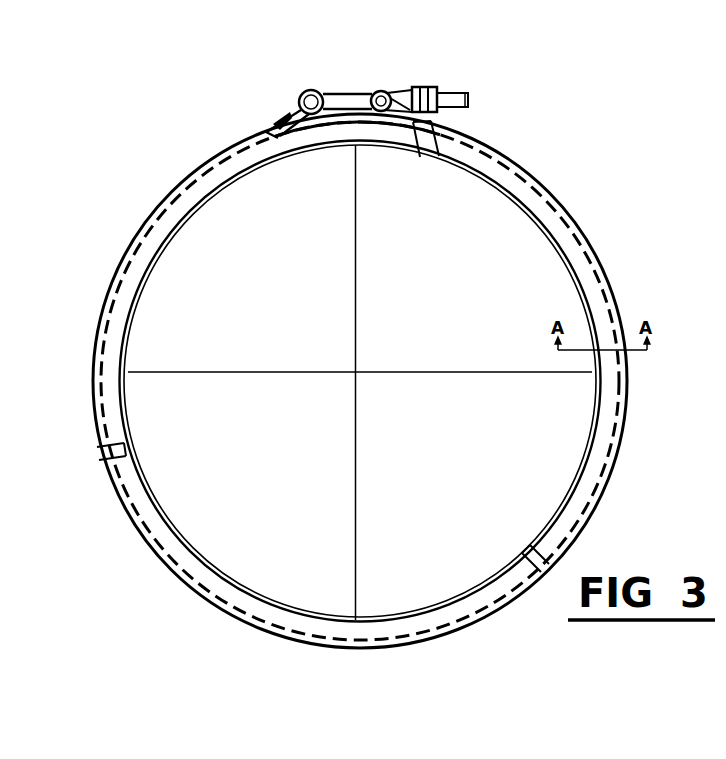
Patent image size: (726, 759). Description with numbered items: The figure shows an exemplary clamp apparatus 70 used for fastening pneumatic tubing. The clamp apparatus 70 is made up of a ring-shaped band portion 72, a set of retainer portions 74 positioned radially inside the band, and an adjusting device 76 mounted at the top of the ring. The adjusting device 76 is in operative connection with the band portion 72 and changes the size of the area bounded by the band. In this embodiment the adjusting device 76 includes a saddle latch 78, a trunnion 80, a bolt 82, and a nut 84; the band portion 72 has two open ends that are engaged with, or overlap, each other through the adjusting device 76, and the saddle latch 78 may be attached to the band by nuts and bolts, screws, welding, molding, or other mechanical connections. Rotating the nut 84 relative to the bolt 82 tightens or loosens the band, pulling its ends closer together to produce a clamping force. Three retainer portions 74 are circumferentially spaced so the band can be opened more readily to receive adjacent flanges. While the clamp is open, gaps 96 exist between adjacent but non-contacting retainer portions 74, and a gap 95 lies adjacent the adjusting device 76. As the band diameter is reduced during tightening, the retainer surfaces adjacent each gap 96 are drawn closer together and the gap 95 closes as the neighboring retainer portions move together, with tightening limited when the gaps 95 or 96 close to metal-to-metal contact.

The clamp apparatus 70 is at (614, 477).
The band portion 72 is at (181, 188).
The retainer portion 74 is at (186, 219).
The adjusting device 76 is at (358, 86).
The saddle latch 78 is at (288, 103).
The trunnion 80 is at (408, 88).
The bolt 82 is at (470, 99).
The nut 84 is at (438, 110).
The gap 95 is at (422, 150).
The gap 96 is at (126, 456).